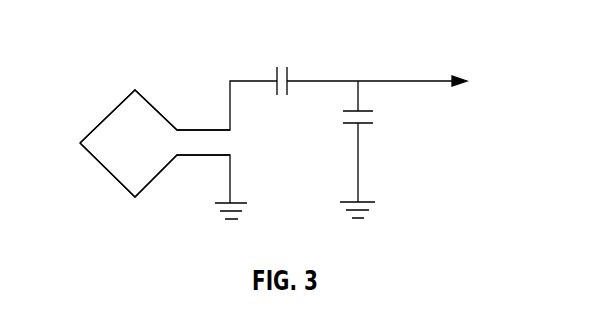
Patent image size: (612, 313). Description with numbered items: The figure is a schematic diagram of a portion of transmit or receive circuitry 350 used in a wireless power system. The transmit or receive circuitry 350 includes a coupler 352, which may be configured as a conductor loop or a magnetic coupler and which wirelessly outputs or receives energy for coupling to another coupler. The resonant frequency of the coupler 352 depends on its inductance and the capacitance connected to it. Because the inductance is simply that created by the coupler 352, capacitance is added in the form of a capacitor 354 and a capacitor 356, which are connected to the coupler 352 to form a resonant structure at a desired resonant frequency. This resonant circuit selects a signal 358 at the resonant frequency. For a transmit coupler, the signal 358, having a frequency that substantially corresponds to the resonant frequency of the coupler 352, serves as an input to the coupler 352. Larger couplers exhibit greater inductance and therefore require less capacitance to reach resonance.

The transmit or receive circuitry 350 is at (155, 57).
The coupler 352 is at (108, 114).
The capacitor 354 is at (289, 73).
The capacitor 356 is at (364, 126).
The signal 358 is at (390, 78).